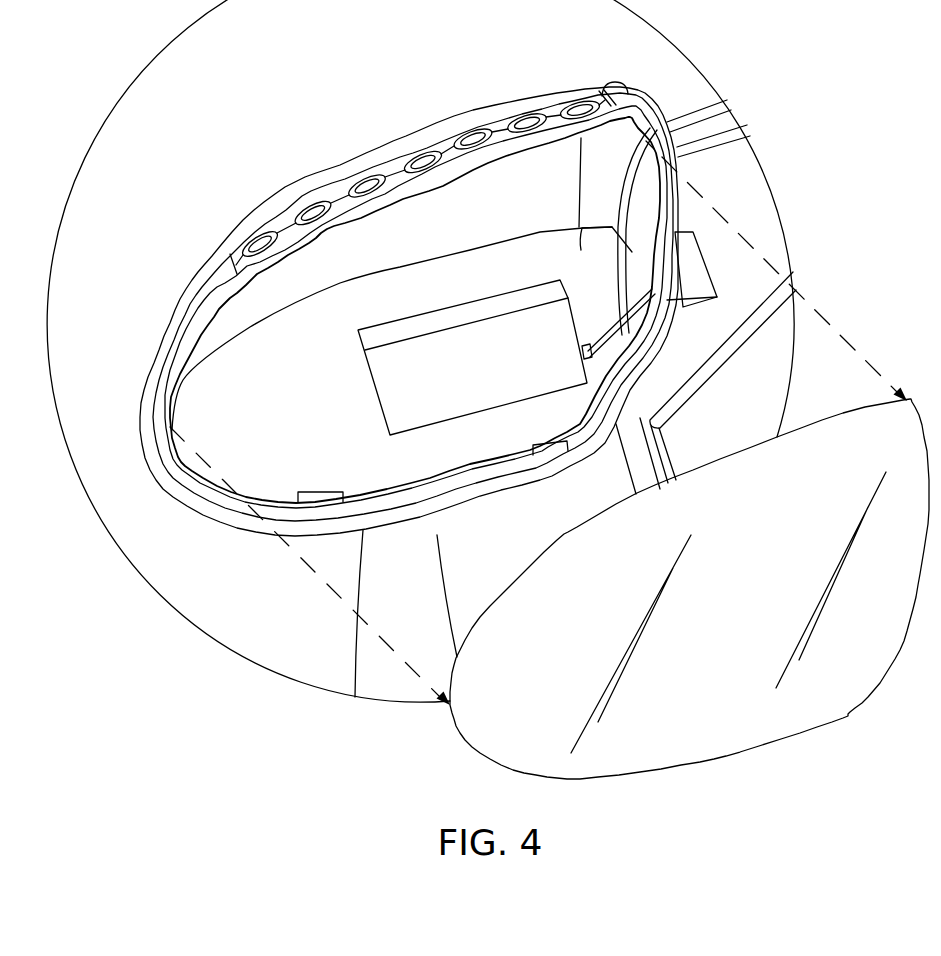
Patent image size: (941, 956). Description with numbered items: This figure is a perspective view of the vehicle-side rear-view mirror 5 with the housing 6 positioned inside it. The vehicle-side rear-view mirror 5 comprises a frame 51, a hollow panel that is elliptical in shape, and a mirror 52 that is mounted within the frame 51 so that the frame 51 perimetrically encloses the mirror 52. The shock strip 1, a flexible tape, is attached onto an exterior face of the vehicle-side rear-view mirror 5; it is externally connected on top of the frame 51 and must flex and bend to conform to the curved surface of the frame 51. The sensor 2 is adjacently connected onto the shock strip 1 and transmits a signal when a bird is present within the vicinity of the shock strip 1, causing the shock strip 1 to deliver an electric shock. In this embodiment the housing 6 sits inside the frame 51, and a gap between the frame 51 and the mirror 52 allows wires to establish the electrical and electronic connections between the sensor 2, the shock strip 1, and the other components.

The shock strip 1 is at (343, 188).
The sensor 2 is at (608, 85).
The vehicle-side rear-view mirror 5 is at (416, 103).
The housing 6 is at (381, 384).
The frame 51 is at (152, 446).
The mirror 52 is at (720, 629).